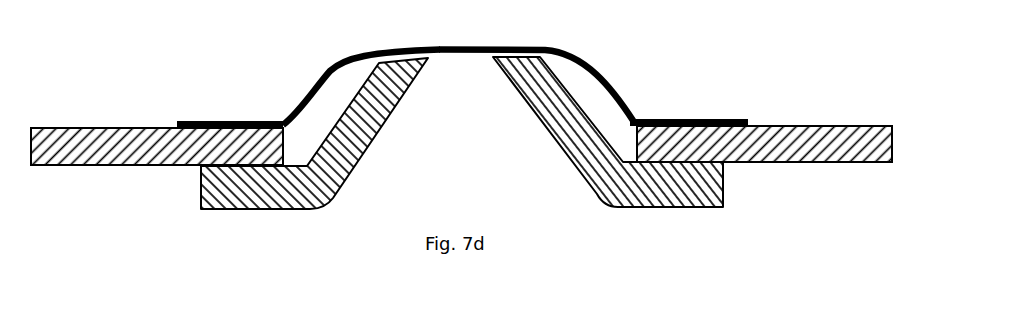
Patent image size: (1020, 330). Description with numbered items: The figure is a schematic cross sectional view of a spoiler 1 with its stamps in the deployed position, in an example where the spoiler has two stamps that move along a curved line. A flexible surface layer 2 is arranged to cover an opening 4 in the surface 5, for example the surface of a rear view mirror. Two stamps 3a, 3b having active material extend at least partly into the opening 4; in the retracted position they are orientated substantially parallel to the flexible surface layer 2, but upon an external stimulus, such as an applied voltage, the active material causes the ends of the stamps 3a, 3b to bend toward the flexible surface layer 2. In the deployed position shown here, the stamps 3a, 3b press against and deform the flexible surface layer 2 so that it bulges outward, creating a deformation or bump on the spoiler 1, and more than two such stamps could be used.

The spoiler 1 is at (648, 65).
The flexible surface layer 2 is at (302, 82).
The stamp 3a is at (372, 165).
The stamp 3b is at (555, 178).
The opening 4 is at (448, 87).
The surface 5 is at (148, 178).